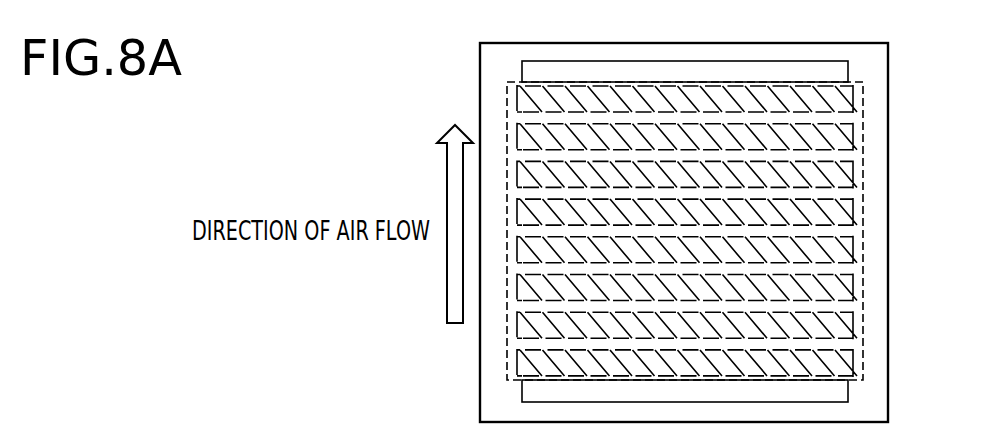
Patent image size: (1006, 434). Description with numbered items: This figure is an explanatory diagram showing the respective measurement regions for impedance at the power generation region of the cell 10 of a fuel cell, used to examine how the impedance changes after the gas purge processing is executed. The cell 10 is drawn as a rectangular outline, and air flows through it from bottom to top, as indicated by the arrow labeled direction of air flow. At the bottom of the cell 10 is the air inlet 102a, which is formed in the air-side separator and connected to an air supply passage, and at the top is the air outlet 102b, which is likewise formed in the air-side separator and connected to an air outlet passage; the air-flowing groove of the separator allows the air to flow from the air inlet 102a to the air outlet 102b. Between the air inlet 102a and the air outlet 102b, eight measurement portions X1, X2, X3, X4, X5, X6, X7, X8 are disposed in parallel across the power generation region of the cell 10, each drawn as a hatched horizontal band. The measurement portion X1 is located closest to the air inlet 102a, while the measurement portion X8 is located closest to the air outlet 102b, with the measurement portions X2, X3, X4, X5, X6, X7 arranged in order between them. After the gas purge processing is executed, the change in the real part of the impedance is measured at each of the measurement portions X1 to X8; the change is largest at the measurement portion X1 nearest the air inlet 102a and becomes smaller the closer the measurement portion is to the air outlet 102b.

The cell 10 is at (468, 84).
The air inlet 102a is at (810, 390).
The air outlet 102b is at (812, 70).
The measurement portion X1 is at (853, 356).
The measurement portion X2 is at (853, 318).
The measurement portion X3 is at (853, 280).
The measurement portion X4 is at (853, 243).
The measurement portion X5 is at (853, 205).
The measurement portion X6 is at (853, 167).
The measurement portion X7 is at (853, 130).
The measurement portion X8 is at (853, 92).